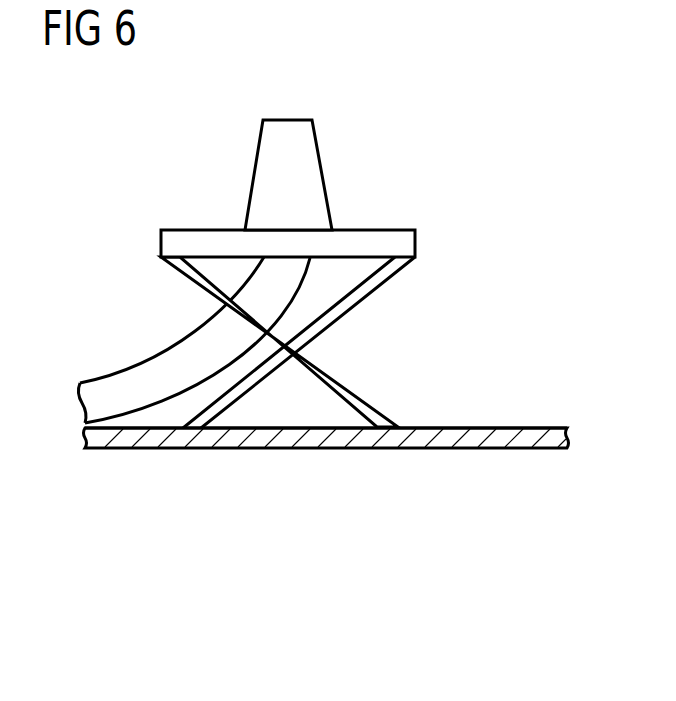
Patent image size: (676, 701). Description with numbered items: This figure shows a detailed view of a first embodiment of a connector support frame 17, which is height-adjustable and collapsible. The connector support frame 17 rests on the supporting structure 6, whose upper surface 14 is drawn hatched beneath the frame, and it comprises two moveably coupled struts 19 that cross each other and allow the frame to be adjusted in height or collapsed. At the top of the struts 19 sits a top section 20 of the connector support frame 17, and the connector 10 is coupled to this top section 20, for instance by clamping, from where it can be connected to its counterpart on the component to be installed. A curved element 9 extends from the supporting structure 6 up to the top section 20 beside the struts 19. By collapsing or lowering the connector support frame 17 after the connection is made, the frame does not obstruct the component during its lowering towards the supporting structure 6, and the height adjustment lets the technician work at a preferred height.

The supporting structure 6 is at (326, 394).
The curved support web 9 is at (115, 390).
The connector 10 is at (285, 128).
The surface of base body 14 is at (473, 428).
The connector support frame 17 is at (330, 210).
The struts 19 is at (368, 287).
The top section 20 is at (378, 247).